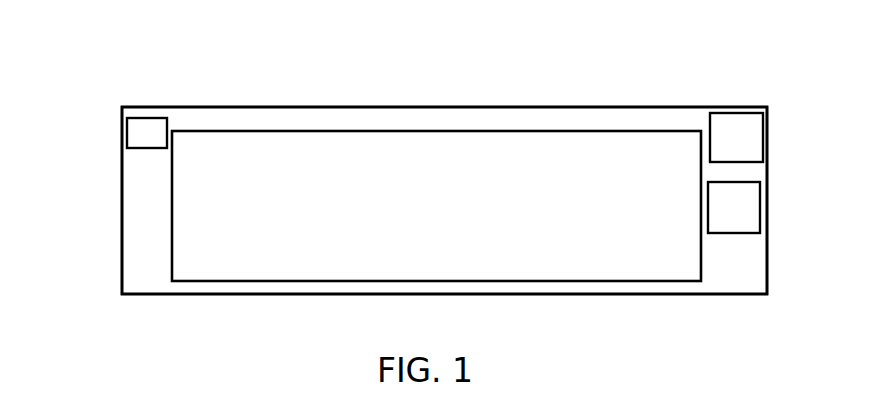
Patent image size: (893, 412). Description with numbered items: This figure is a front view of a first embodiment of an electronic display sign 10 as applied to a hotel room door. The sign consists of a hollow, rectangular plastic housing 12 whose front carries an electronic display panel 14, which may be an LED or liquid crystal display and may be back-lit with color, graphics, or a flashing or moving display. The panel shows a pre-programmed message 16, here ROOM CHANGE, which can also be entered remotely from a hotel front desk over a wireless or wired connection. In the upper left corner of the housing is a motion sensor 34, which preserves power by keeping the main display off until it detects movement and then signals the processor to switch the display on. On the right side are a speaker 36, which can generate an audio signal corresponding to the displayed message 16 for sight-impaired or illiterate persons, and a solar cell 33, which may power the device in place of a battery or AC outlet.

The electronic display sign 10 is at (164, 84).
The housing 12 is at (120, 200).
The front electronic display panel 14 is at (618, 142).
The message 16 is at (320, 192).
The solar cell 33 is at (752, 220).
The motion sensor 34 is at (127, 125).
The speaker 36 is at (750, 151).